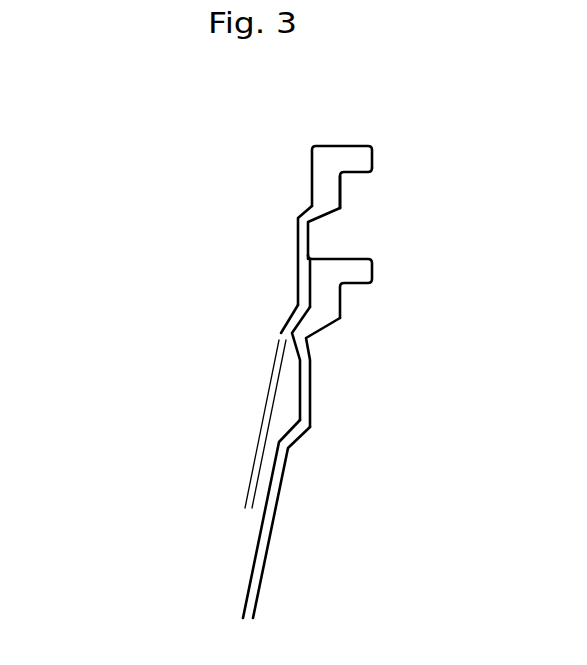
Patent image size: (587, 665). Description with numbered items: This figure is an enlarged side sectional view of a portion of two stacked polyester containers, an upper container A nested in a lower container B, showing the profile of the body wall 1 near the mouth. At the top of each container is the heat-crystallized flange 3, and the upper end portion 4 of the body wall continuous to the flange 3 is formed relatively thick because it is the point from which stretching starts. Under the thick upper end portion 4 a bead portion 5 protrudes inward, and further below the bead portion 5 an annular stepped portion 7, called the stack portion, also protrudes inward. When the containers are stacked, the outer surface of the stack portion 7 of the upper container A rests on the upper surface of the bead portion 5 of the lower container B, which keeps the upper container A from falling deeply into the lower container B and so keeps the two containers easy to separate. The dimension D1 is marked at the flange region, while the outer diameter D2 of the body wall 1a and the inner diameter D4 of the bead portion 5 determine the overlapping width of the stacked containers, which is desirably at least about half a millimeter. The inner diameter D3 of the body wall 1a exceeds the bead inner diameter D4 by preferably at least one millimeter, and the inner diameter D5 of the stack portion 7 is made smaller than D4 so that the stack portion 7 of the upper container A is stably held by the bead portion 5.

The body wall 1 is at (270, 505).
The body wall 1a is at (303, 387).
The flange 3 is at (331, 150).
The upper end portion 4 is at (332, 188).
The bead portion 5 is at (295, 220).
The annular stepped portion 7 is at (293, 443).
The upper container A is at (356, 134).
The lower container B is at (371, 249).
The dimension D1 is at (302, 155).
The outer diameter of body wall D2 is at (299, 273).
The inner diameter of body wall D3 is at (290, 410).
The inner diameter of bead portion D4 is at (271, 338).
The inner diameter of stack portion D5 is at (268, 445).